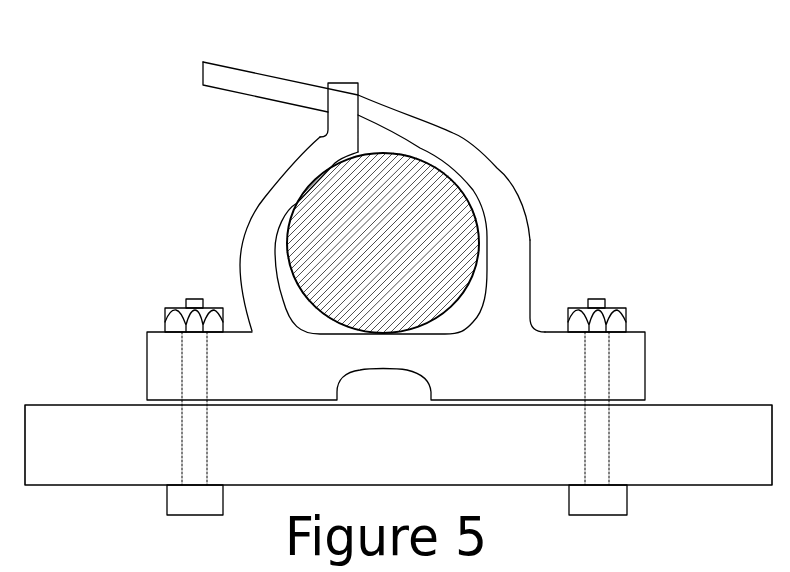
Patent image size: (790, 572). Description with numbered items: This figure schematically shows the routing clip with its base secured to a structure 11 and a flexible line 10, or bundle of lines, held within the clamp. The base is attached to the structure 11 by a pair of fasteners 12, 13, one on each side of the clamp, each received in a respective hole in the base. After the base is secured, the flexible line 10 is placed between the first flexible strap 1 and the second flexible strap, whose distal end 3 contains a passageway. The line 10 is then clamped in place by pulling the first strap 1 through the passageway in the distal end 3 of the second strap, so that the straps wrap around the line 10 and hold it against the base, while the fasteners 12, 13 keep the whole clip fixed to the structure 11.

The first flexible strap 1 is at (258, 82).
The distal end 3 is at (338, 82).
The flexible line 10 is at (302, 221).
The structure 11 is at (97, 403).
The fastener 12 is at (188, 455).
The fastener 13 is at (598, 445).